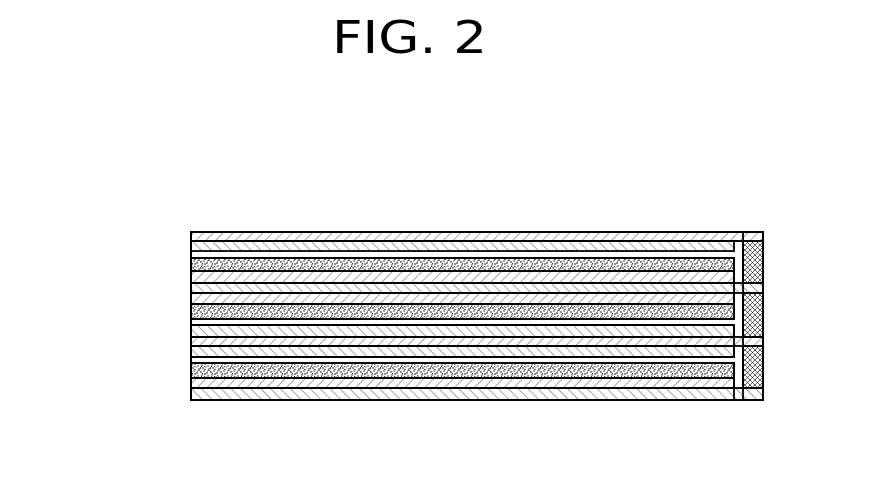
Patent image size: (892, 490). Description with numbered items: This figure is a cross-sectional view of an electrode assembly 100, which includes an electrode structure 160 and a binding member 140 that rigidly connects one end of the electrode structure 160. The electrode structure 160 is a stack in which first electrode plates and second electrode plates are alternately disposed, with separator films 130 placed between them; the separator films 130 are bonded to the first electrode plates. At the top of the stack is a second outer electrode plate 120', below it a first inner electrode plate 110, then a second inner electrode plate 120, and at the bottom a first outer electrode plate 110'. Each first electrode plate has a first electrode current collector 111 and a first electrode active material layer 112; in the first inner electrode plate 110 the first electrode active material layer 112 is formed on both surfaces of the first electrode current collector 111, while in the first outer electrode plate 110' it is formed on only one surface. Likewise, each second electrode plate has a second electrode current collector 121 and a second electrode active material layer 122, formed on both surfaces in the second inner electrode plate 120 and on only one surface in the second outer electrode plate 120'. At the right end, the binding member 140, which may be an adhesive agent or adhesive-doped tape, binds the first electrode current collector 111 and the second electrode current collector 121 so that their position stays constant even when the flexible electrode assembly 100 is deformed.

The electrode assembly 100 is at (770, 186).
The first inner electrode plate 110 is at (396, 285).
The first outer electrode plate 110' is at (396, 406).
The first electrode current collector 111 is at (200, 288).
The first electrode active material layer 112 is at (200, 277).
The second inner electrode plate 120 is at (396, 355).
The second outer electrode plate 120' is at (410, 206).
The second electrode current collector 121 is at (203, 236).
The second electrode active material layer 122 is at (196, 246).
The separator film 130 is at (200, 263).
The binding member 140 is at (755, 262).
The electrode structure 160 is at (53, 193).